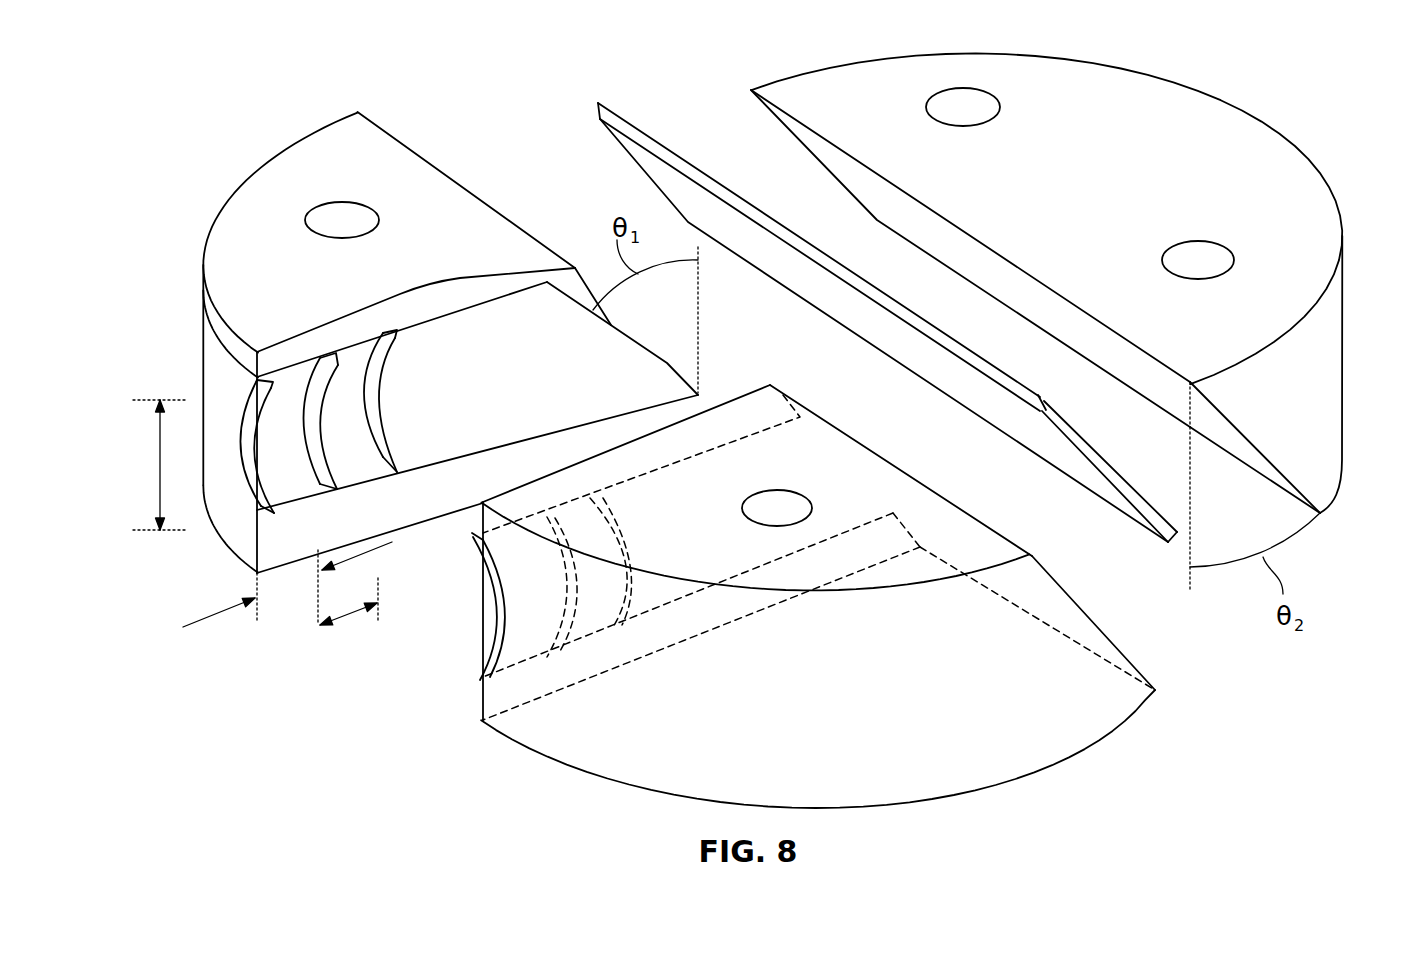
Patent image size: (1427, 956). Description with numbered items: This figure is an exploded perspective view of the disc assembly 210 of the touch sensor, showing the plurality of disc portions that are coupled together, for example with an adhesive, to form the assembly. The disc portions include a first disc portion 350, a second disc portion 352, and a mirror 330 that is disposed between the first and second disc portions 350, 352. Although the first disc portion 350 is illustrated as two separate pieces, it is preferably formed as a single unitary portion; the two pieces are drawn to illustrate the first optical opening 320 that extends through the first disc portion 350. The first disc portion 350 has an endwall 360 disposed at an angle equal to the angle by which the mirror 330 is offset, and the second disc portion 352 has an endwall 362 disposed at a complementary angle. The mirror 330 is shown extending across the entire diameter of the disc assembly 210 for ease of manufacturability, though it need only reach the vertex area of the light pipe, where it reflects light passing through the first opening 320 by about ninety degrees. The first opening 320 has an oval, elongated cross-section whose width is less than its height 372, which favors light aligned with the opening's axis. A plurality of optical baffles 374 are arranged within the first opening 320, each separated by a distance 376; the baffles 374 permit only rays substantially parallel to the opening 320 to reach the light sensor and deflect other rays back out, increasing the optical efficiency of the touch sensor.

The disc assembly 210 is at (1027, 313).
The first optical opening 320 is at (393, 427).
The mirror 330 is at (1098, 496).
The first disc portion 350 is at (228, 360).
The second disc portion 352 is at (1322, 374).
The endwall 360 is at (554, 247).
The endwall 362 is at (800, 140).
The height 372 is at (160, 463).
The optical baffles 374 is at (255, 503).
The distance 376 is at (212, 618).